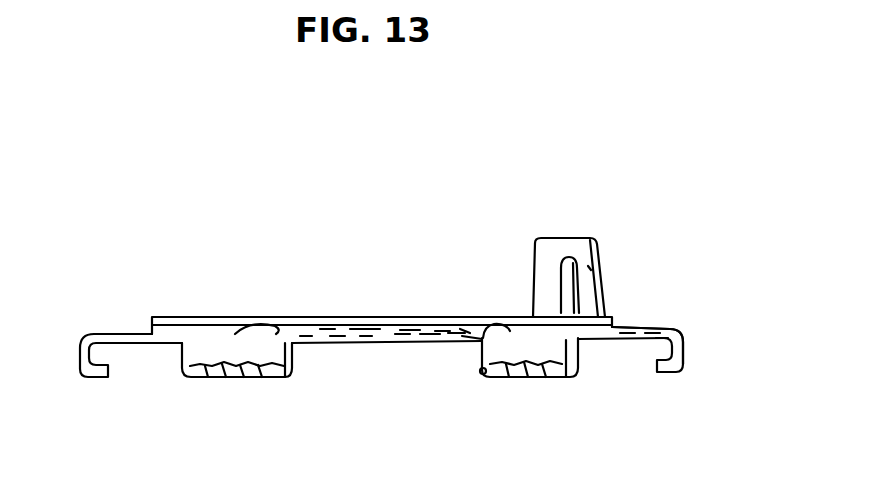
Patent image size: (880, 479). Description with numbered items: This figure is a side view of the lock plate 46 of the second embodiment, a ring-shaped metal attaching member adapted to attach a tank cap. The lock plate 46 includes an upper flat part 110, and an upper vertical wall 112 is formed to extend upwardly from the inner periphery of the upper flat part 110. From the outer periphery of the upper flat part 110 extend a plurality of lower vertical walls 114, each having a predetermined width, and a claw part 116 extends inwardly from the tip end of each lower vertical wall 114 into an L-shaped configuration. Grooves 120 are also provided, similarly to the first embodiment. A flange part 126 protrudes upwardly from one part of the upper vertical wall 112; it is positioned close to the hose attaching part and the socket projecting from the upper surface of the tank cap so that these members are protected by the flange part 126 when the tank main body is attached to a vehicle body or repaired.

The lock plate 46 is at (140, 377).
The upper flat part 110 is at (117, 334).
The upper vertical wall 112 is at (210, 317).
The groove 120 is at (562, 280).
The flange part 126 is at (603, 262).
The claw part 116 is at (666, 373).
The lower vertical wall 114 is at (684, 346).